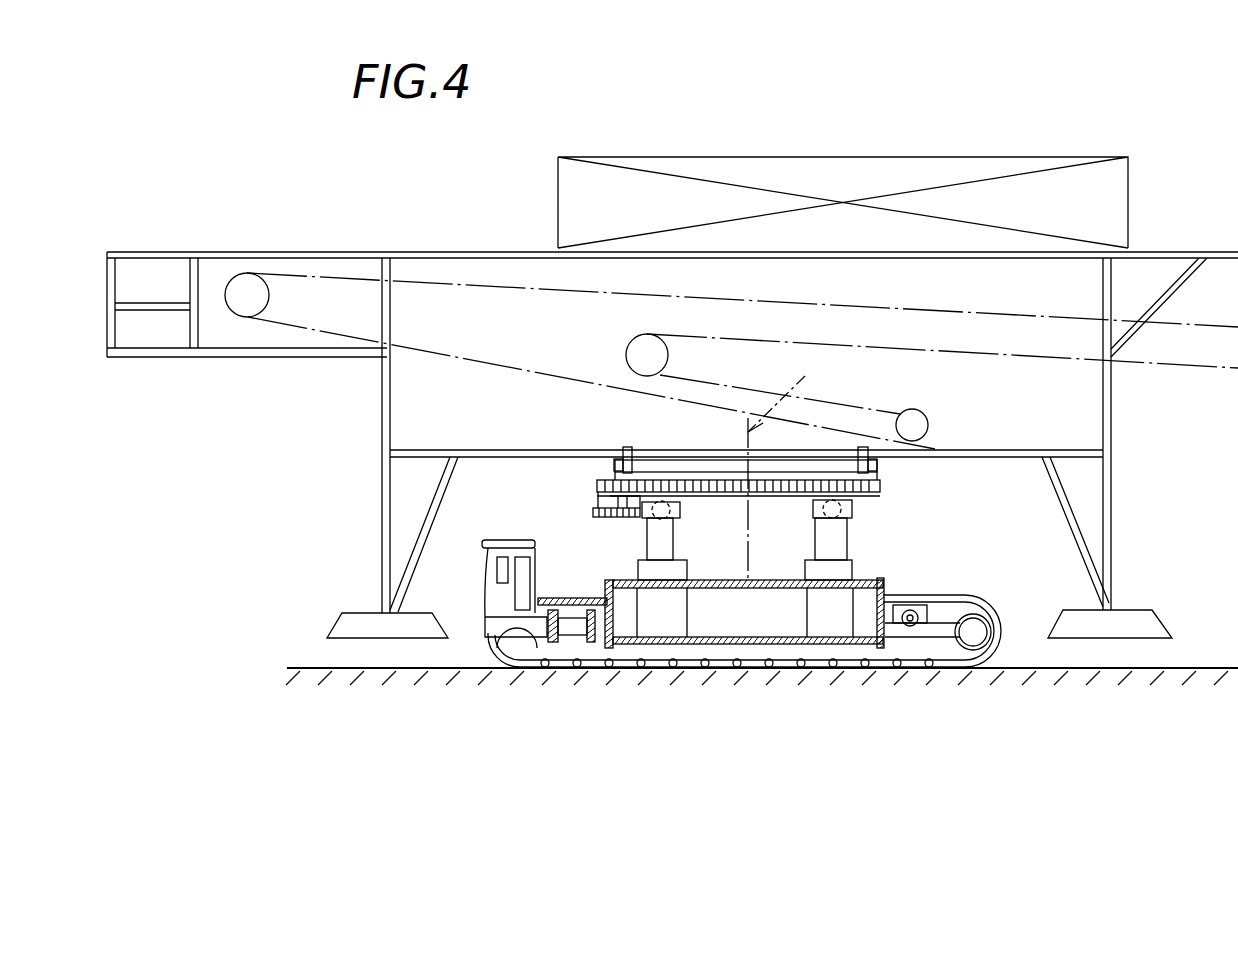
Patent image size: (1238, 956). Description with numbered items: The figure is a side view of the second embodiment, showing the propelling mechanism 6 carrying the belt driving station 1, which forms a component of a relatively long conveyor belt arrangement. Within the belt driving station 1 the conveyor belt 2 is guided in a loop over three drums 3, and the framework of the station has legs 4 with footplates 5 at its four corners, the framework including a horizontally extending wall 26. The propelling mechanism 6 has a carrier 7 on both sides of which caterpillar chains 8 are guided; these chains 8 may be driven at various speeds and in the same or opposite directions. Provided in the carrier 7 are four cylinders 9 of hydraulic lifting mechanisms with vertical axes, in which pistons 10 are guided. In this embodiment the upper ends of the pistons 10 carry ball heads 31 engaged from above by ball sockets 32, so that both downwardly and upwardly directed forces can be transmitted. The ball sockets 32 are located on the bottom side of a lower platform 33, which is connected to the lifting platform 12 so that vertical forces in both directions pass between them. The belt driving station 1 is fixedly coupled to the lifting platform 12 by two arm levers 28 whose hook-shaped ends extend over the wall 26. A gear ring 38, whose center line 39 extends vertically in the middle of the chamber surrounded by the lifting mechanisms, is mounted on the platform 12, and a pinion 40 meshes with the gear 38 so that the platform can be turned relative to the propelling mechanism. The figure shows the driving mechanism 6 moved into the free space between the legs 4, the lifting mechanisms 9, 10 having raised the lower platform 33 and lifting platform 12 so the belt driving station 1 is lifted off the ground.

The belt driving station 1 is at (322, 235).
The conveyor belt 2 is at (873, 304).
The drums 3 is at (265, 296).
The legs 4 is at (1072, 533).
The footplates 5 is at (350, 625).
The propelling mechanism 6 is at (707, 680).
The carrier 7 is at (786, 625).
The caterpillar chains 8 is at (952, 597).
The cylinders 9 is at (652, 571).
The pistons 10 is at (660, 531).
The lifting platform 12 is at (677, 465).
The horizontally extending wall 26 is at (477, 452).
The arm levers 28 is at (622, 450).
The ball heads 31 is at (683, 512).
The ball sockets 32 is at (647, 517).
The lower platform 33 is at (732, 495).
The gear ring 38 is at (705, 480).
The center line 39 is at (793, 396).
The pinion 40 is at (592, 492).